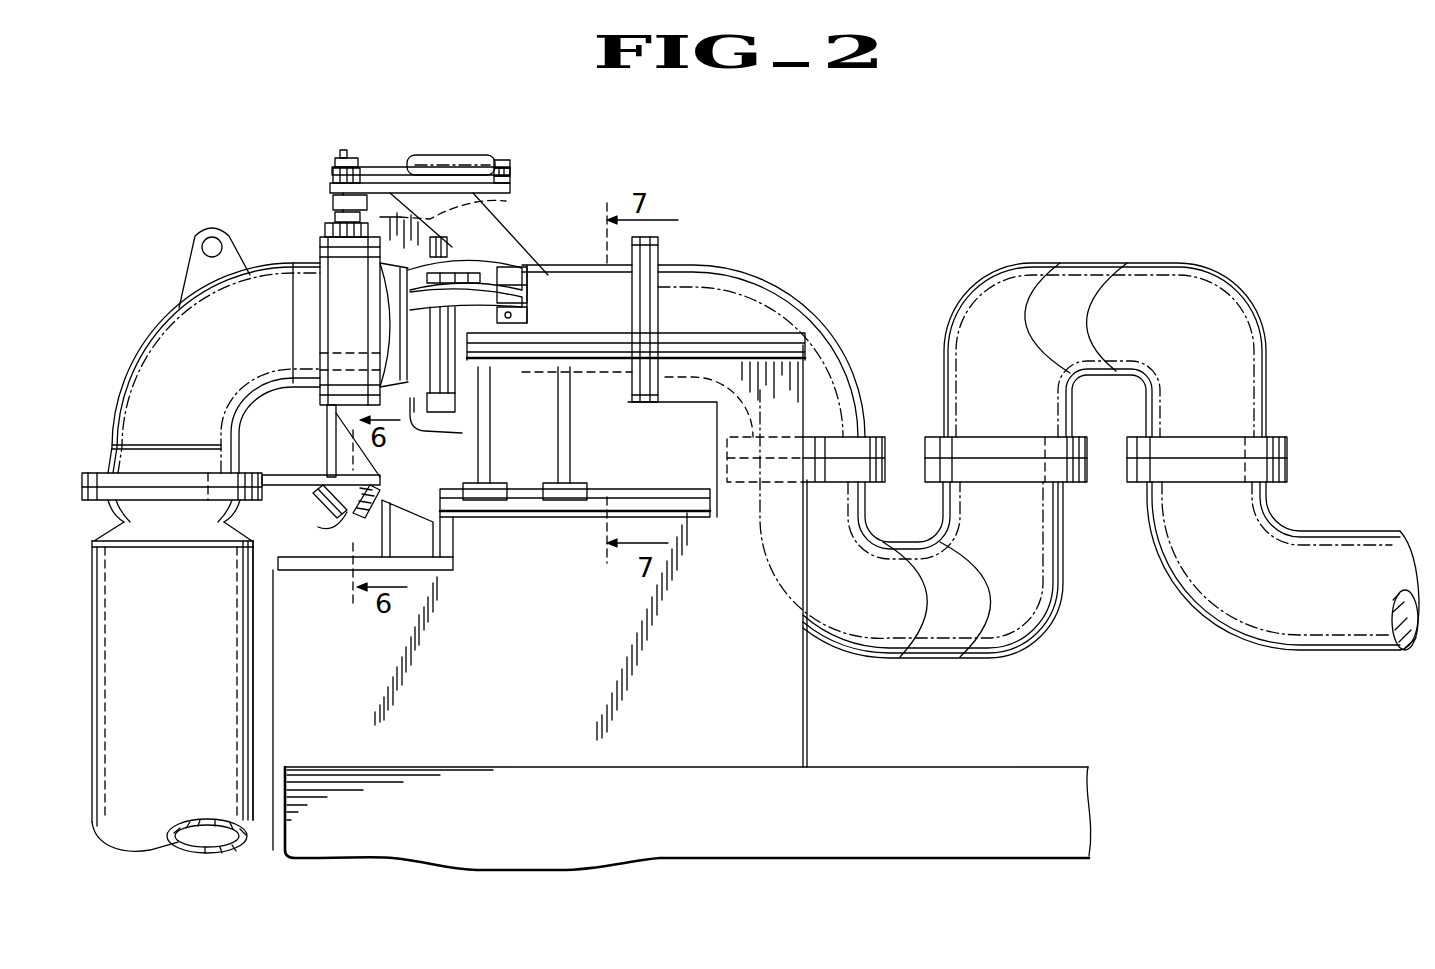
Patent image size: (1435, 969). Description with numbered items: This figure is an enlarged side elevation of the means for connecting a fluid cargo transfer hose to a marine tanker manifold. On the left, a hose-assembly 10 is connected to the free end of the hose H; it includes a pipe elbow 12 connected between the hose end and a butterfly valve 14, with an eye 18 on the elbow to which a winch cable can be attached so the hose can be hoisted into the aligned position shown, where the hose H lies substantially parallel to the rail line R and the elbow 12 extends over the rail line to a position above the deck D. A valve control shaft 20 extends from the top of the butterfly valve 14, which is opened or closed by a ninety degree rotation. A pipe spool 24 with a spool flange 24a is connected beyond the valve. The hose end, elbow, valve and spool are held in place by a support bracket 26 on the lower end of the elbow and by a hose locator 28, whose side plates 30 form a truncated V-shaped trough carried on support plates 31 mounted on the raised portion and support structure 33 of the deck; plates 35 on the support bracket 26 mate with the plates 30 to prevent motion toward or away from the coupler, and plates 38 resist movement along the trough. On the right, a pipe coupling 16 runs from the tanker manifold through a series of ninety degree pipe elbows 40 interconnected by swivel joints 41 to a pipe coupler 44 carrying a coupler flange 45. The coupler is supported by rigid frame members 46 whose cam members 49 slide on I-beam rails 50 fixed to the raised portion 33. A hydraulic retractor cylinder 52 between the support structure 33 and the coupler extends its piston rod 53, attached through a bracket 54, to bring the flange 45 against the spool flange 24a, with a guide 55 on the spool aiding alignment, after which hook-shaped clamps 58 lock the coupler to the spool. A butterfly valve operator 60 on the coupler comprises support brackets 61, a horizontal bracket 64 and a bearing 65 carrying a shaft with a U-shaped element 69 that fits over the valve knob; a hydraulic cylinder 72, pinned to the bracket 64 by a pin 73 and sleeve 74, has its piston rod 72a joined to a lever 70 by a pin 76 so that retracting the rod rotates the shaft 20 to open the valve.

The hose-assembly 10 is at (193, 216).
The pipe elbow 12 is at (244, 344).
The butterfly valve 14 is at (316, 244).
The pipe coupling 16 is at (1073, 465).
The eye 18 is at (193, 245).
The valve control shaft 20 is at (337, 207).
The pipe spool 24 is at (385, 317).
The spool flange 24a is at (452, 244).
The support bracket 26 is at (320, 422).
The hose locator 28 is at (437, 537).
The side plates 30 is at (325, 488).
The support plates 31 is at (336, 552).
The raised portion and support structure 33 is at (490, 692).
The plates 35 is at (337, 479).
The plates 38 is at (320, 527).
The pipe elbows 40 is at (958, 384).
The swivel joints 41 is at (872, 436).
The pipe coupler 44 is at (585, 305).
The coupler flange 45 is at (443, 250).
The rigid frame members 46 is at (563, 430).
The cam members 49 is at (556, 485).
The rails 50 is at (623, 489).
The hydraulic retractor cylinder 52 is at (690, 338).
The piston rod 53 is at (537, 348).
The bracket 54 is at (463, 343).
The guides 55 is at (495, 202).
The hook-shaped clamps 58 is at (410, 292).
The butterfly valve operator 60 is at (410, 164).
The support brackets 61 is at (523, 253).
The horizontal bracket 64 is at (510, 183).
The bearing 65 is at (333, 177).
The U-shaped element 69 is at (333, 198).
The lever 70 is at (334, 160).
The hydraulic cylinder 72 is at (430, 157).
The piston rod 72a is at (387, 166).
The pin 73 is at (498, 162).
The sleeve 74 is at (512, 168).
The pin 76 is at (343, 150).
The hose H is at (176, 621).
The rail line R is at (260, 679).
The deck D is at (883, 767).